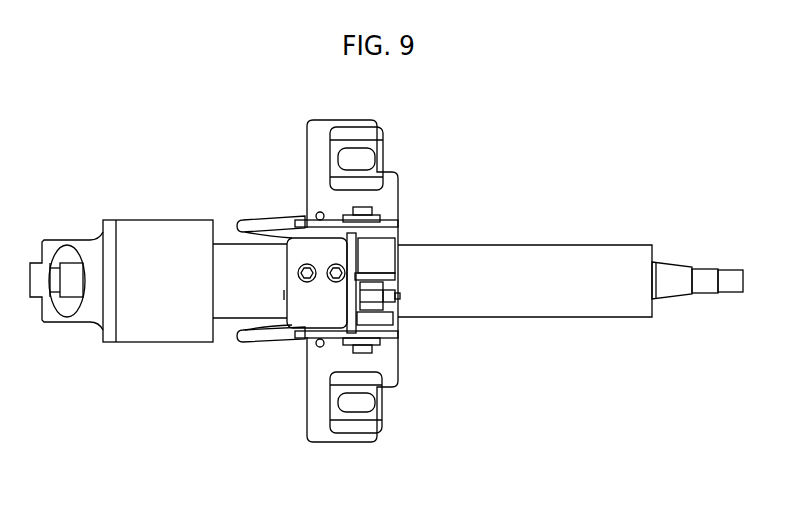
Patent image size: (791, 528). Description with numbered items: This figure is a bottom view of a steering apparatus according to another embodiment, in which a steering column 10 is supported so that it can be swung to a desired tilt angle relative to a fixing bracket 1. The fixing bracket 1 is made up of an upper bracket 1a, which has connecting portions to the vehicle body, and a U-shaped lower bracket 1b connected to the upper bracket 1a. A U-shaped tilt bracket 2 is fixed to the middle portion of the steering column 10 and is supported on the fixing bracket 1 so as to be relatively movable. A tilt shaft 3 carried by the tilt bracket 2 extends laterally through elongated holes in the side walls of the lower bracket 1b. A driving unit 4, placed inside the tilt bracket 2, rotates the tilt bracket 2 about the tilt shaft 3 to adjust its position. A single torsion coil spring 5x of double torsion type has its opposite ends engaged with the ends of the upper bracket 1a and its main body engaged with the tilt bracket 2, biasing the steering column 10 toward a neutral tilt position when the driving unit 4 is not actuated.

The fixing bracket 1 is at (403, 185).
The upper bracket 1a is at (318, 192).
The lower bracket 1b is at (398, 226).
The tilt bracket 2 is at (317, 303).
The tilt shaft 3 is at (365, 355).
The driving unit 4 is at (403, 295).
The torsion coil spring 5x is at (248, 222).
The steering column 10 is at (543, 246).